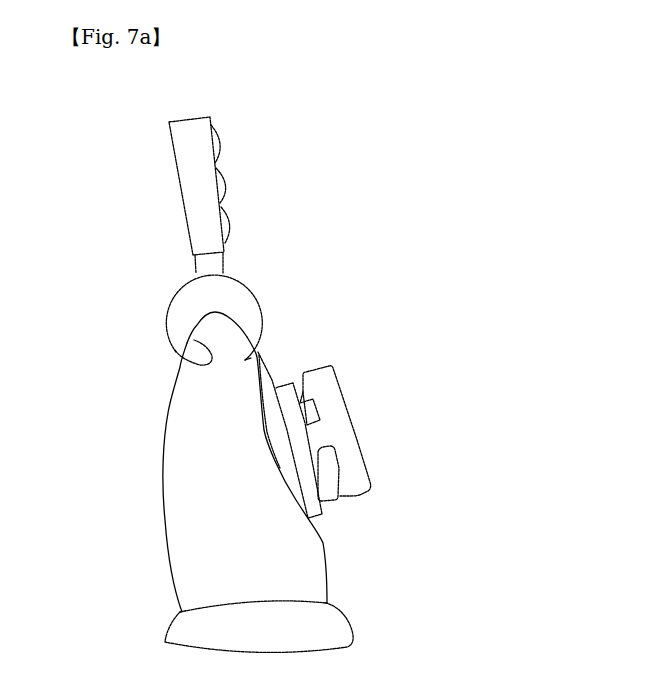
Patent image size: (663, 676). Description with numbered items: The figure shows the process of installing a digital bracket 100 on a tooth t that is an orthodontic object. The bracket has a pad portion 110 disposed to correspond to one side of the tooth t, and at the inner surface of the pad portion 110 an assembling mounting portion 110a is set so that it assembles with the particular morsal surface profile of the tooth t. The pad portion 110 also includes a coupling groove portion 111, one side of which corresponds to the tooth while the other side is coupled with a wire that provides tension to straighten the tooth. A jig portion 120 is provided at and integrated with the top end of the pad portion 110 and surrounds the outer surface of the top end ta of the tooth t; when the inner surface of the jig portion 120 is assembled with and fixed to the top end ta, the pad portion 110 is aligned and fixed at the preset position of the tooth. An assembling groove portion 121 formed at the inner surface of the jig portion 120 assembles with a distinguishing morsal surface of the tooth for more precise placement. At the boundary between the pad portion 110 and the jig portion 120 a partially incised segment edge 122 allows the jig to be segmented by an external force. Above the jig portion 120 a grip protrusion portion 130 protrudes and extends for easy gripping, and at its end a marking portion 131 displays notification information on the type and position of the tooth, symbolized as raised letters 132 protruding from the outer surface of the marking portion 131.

The digital bracket 100 is at (117, 111).
The pad portion 110 is at (320, 519).
The assembling mounting portion 110a is at (283, 503).
The coupling groove portion 111 is at (330, 449).
The jig portion 120 is at (187, 303).
The assembling groove portion 121 is at (201, 367).
The segment edge 122 is at (257, 340).
The grip protrusion portion 130 is at (193, 182).
The marking portion 131 is at (216, 163).
The raised letters 132 is at (232, 222).
The tooth t is at (183, 495).
The top end of the tooth ta is at (200, 326).